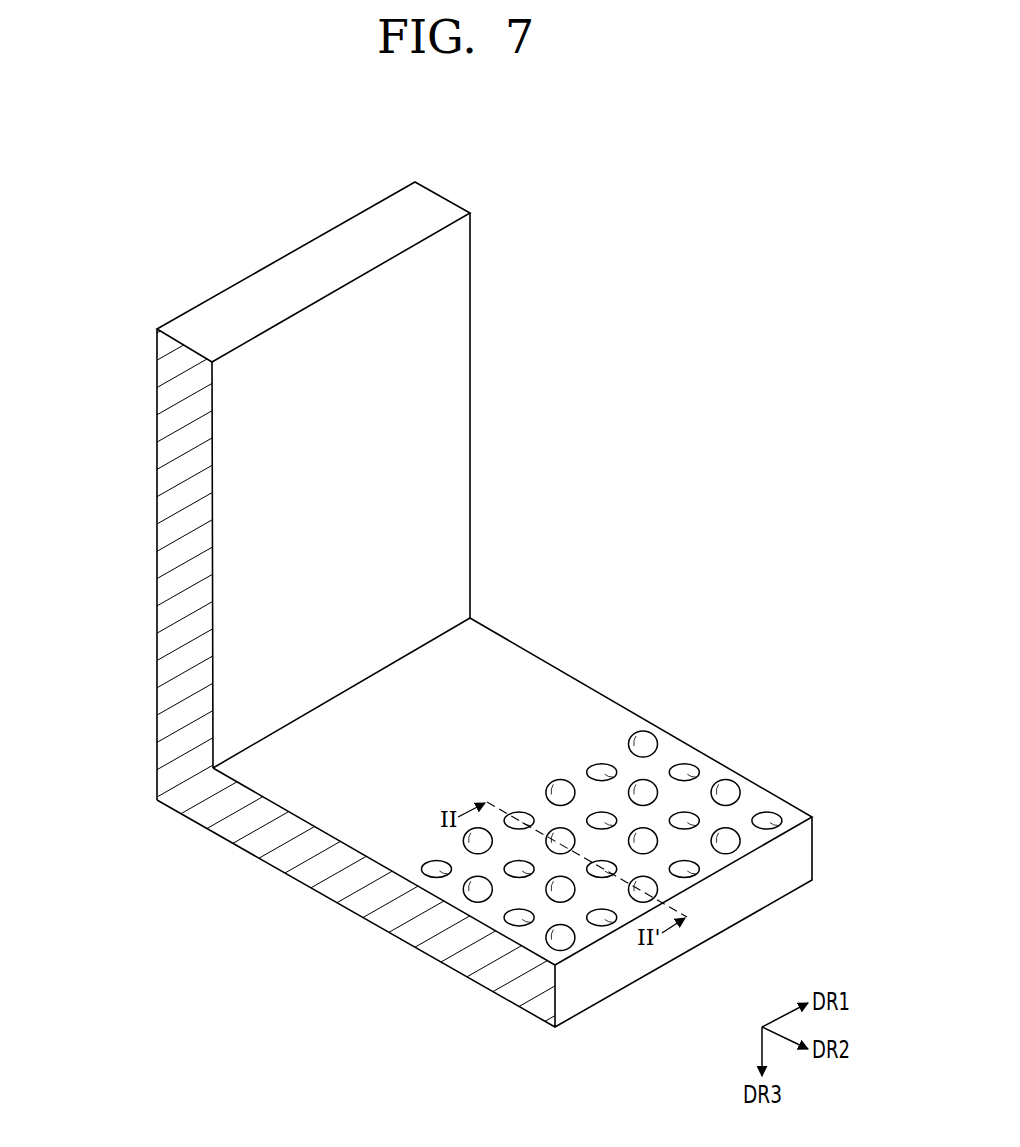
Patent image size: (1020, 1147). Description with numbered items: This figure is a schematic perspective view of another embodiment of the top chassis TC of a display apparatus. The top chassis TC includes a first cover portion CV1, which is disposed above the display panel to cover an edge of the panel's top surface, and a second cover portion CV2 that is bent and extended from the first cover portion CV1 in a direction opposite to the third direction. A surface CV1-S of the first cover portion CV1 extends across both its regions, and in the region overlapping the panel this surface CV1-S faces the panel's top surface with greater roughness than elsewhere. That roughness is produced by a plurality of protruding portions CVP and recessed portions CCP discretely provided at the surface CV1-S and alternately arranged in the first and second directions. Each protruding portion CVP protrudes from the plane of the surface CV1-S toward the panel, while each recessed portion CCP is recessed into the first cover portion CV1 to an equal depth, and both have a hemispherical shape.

The top chassis TC is at (746, 211).
The first cover portion CV1 is at (257, 832).
The second cover portion CV2 is at (178, 520).
The surface of the first cover portion CV1-S is at (527, 701).
The recessed portion CCP is at (684, 774).
The protruding portion CVP is at (726, 777).